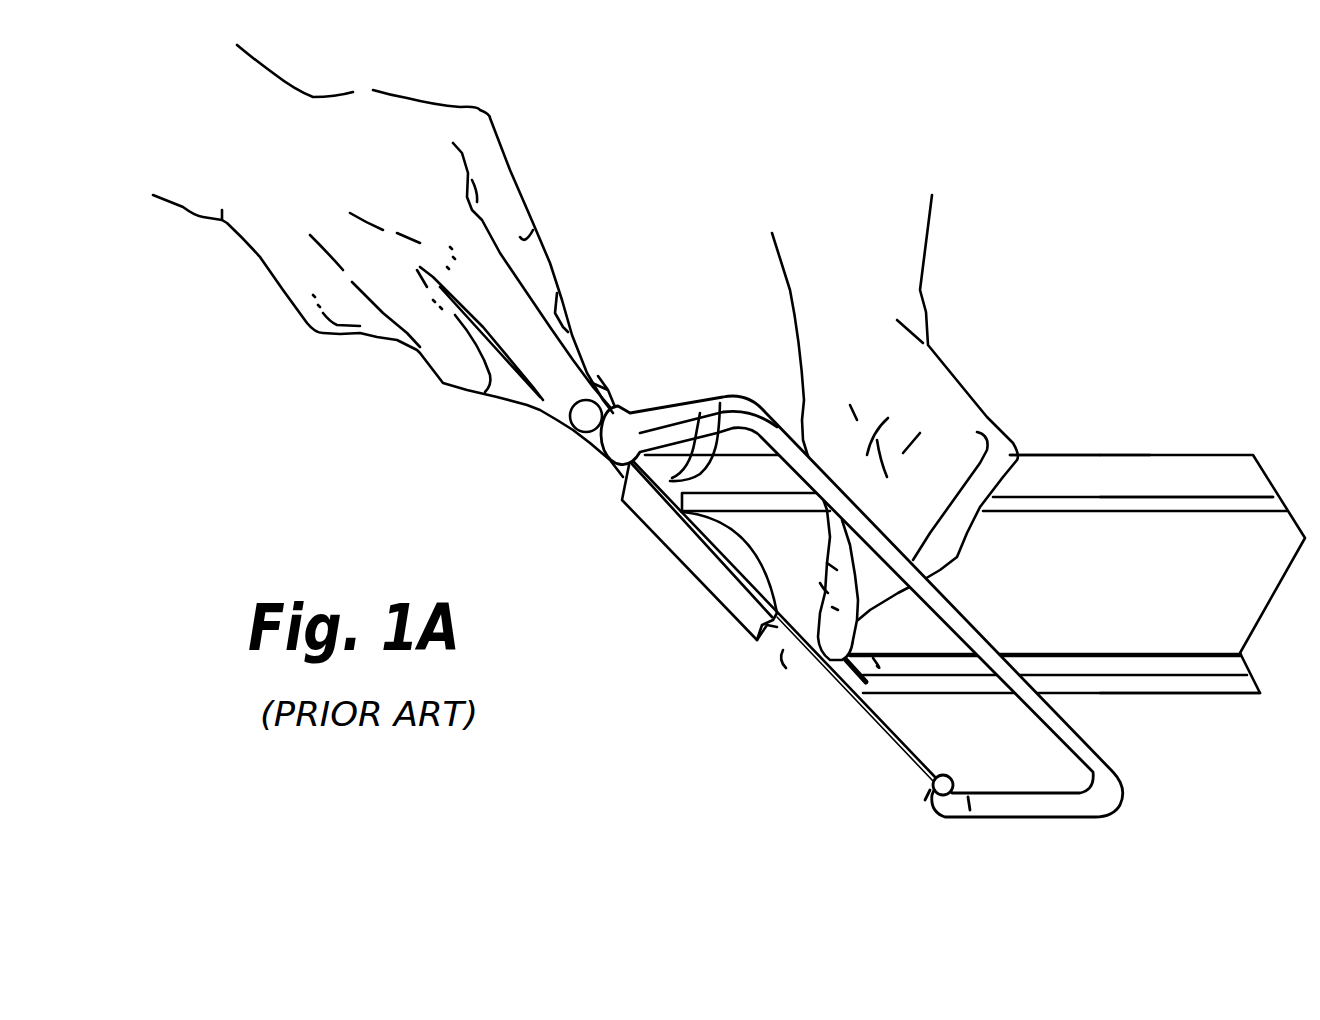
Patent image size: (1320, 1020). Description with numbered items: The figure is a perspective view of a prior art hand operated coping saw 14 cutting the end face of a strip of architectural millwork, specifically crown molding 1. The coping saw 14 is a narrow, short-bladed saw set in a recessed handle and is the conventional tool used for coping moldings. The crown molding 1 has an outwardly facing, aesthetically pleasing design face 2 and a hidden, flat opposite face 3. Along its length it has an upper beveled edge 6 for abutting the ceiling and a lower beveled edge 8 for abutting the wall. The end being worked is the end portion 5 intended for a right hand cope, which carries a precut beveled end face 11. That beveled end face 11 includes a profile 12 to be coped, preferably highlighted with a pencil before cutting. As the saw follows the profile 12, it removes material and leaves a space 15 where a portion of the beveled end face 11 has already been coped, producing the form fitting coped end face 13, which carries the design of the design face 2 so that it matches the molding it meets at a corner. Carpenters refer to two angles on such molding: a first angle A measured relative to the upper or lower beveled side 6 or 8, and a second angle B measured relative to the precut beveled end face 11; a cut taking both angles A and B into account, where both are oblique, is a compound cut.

The crown molding 1 is at (1121, 420).
The design face 2 is at (1161, 587).
The opposite face 3 is at (710, 590).
The end portion 5 is at (1057, 455).
The upper beveled edge 6 is at (1188, 695).
The lower beveled edge 8 is at (1182, 455).
The beveled end face 11 is at (677, 537).
The profile 12 is at (765, 565).
The coped end face 13 is at (843, 687).
The coping saw 14 is at (668, 413).
The space 15 is at (787, 657).
The first angle A is at (720, 403).
The second angle B is at (873, 658).